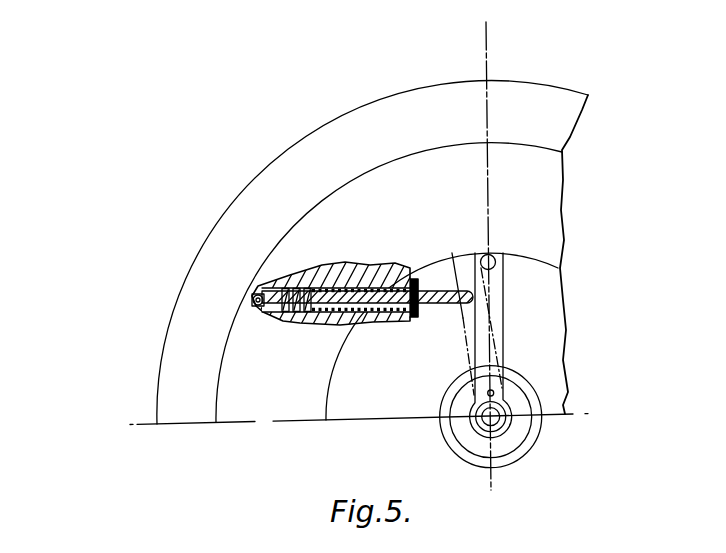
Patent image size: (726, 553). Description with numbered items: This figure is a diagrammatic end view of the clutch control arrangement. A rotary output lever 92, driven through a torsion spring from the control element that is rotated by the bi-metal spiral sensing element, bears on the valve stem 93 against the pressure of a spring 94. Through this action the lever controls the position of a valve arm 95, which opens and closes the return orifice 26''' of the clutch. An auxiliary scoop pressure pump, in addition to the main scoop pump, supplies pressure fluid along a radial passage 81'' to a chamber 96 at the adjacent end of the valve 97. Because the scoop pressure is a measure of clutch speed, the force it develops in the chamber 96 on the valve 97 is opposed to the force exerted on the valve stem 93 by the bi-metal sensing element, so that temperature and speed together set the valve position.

The rotary output lever 92 is at (504, 296).
The return orifice 26''' is at (504, 239).
The valve arm 95 is at (466, 260).
The spring 94 is at (340, 264).
The valve stem 93 is at (428, 305).
The chamber 96 is at (285, 323).
The valve 97 is at (322, 323).
The radial passage 81'' is at (245, 281).